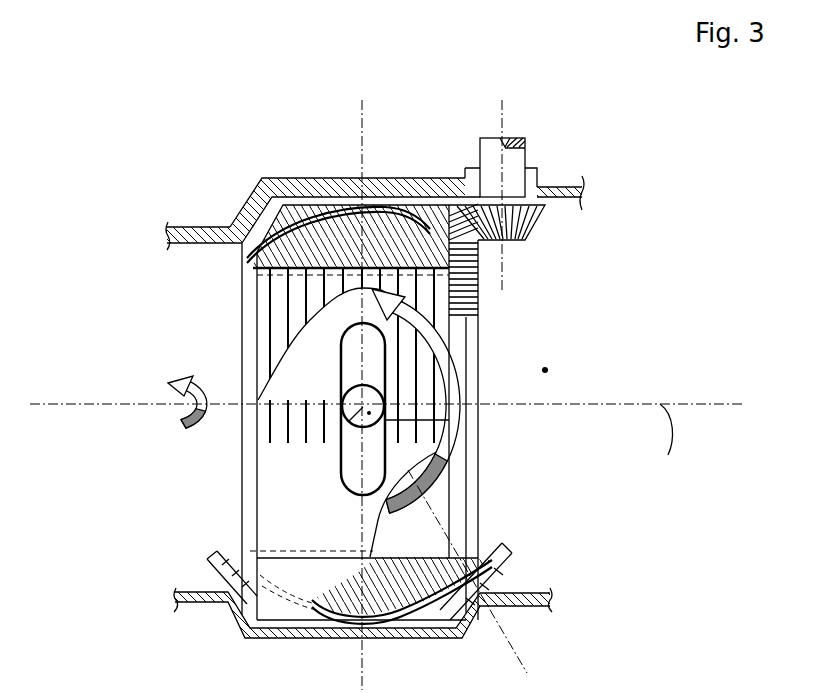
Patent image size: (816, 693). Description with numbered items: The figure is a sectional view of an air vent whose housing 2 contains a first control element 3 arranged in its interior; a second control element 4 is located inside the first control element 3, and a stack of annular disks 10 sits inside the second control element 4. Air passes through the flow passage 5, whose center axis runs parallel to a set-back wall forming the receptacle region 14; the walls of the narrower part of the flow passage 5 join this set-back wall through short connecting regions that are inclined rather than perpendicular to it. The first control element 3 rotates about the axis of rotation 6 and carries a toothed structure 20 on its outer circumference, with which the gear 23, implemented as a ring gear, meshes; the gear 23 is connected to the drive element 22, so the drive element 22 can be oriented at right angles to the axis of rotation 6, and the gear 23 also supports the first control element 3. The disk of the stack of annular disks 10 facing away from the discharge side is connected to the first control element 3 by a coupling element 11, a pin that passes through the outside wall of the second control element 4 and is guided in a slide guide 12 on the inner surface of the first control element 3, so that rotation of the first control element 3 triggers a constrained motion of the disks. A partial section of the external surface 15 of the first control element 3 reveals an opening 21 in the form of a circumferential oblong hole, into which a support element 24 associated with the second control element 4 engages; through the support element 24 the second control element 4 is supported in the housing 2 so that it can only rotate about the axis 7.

The housing 2 is at (255, 202).
The first control element 3 is at (283, 220).
The second control element 4 is at (283, 250).
The flow passage 5 is at (385, 366).
The axis of rotation 6 is at (671, 441).
The axis 7 is at (330, 440).
The stack of annular disks 10 is at (285, 307).
The coupling element 11 is at (450, 612).
The slide guide 12 is at (510, 551).
The receptacle region 14 is at (240, 205).
The external surface 15 is at (273, 512).
The toothed structure 20 is at (480, 291).
The opening 21 is at (548, 368).
The drive element 22 is at (510, 170).
The gear 23 is at (542, 222).
The support element 24 is at (385, 420).